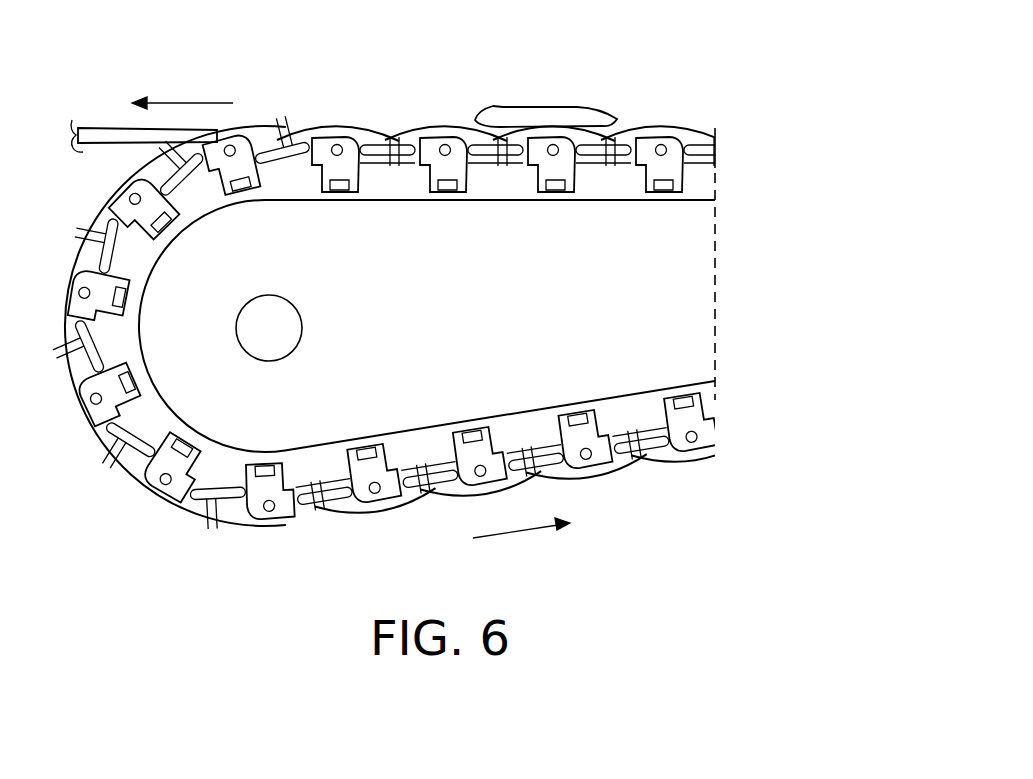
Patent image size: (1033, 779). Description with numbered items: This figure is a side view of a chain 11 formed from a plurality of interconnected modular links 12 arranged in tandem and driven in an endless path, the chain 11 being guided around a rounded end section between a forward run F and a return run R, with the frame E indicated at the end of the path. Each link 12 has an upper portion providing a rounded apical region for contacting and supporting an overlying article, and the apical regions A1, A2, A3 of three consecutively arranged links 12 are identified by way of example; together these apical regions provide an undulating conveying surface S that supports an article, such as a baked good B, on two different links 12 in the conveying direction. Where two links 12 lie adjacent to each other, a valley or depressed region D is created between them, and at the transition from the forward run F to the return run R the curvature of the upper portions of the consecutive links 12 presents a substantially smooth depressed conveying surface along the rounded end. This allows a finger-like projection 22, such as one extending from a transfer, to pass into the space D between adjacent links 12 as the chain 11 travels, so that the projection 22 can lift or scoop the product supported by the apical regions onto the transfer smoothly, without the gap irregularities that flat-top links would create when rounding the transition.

The projection 22 is at (112, 127).
The forward run F is at (182, 94).
The depressed region D is at (240, 130).
The apical region A1 is at (288, 148).
The apical region A2 is at (394, 148).
The apical region A3 is at (502, 148).
The baked good B is at (578, 107).
The conveying surface S is at (424, 282).
The link 12 is at (700, 130).
The chain 11 is at (730, 148).
The frame E is at (700, 298).
The return run R is at (521, 541).